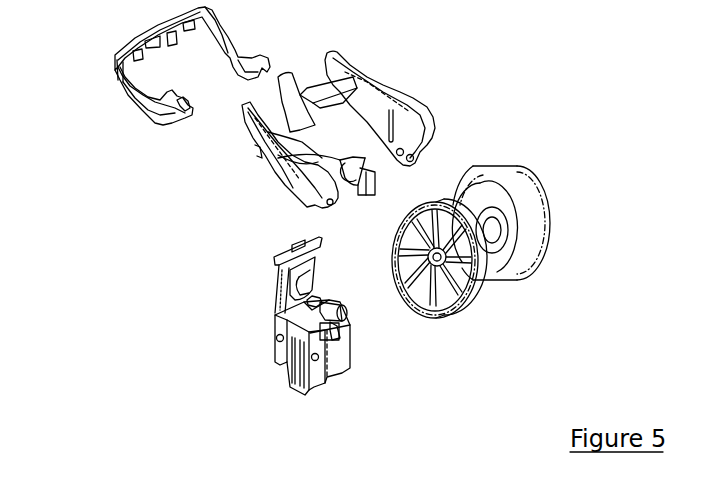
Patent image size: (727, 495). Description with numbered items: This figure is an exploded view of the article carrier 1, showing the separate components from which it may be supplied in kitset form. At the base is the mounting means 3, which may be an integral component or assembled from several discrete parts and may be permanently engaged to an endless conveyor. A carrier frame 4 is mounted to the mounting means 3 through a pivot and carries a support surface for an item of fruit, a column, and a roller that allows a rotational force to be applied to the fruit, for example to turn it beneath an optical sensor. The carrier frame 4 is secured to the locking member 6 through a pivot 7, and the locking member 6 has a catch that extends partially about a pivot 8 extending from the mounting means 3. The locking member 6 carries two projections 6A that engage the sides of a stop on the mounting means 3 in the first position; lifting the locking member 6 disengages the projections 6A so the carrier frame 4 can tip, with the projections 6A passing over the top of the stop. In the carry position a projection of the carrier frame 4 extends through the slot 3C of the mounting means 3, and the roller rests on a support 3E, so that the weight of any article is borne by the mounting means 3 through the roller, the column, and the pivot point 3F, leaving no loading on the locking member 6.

The carrier 1 is at (486, 75).
The mounting means 3 is at (255, 292).
The slot 3C is at (306, 275).
The support 3E is at (305, 307).
The pivot point 3F is at (346, 315).
The carrier frame 4 is at (468, 167).
The locking member 6 is at (127, 95).
The projections 6A is at (143, 55).
The pivot 7 is at (182, 112).
The pivot 8 is at (274, 257).